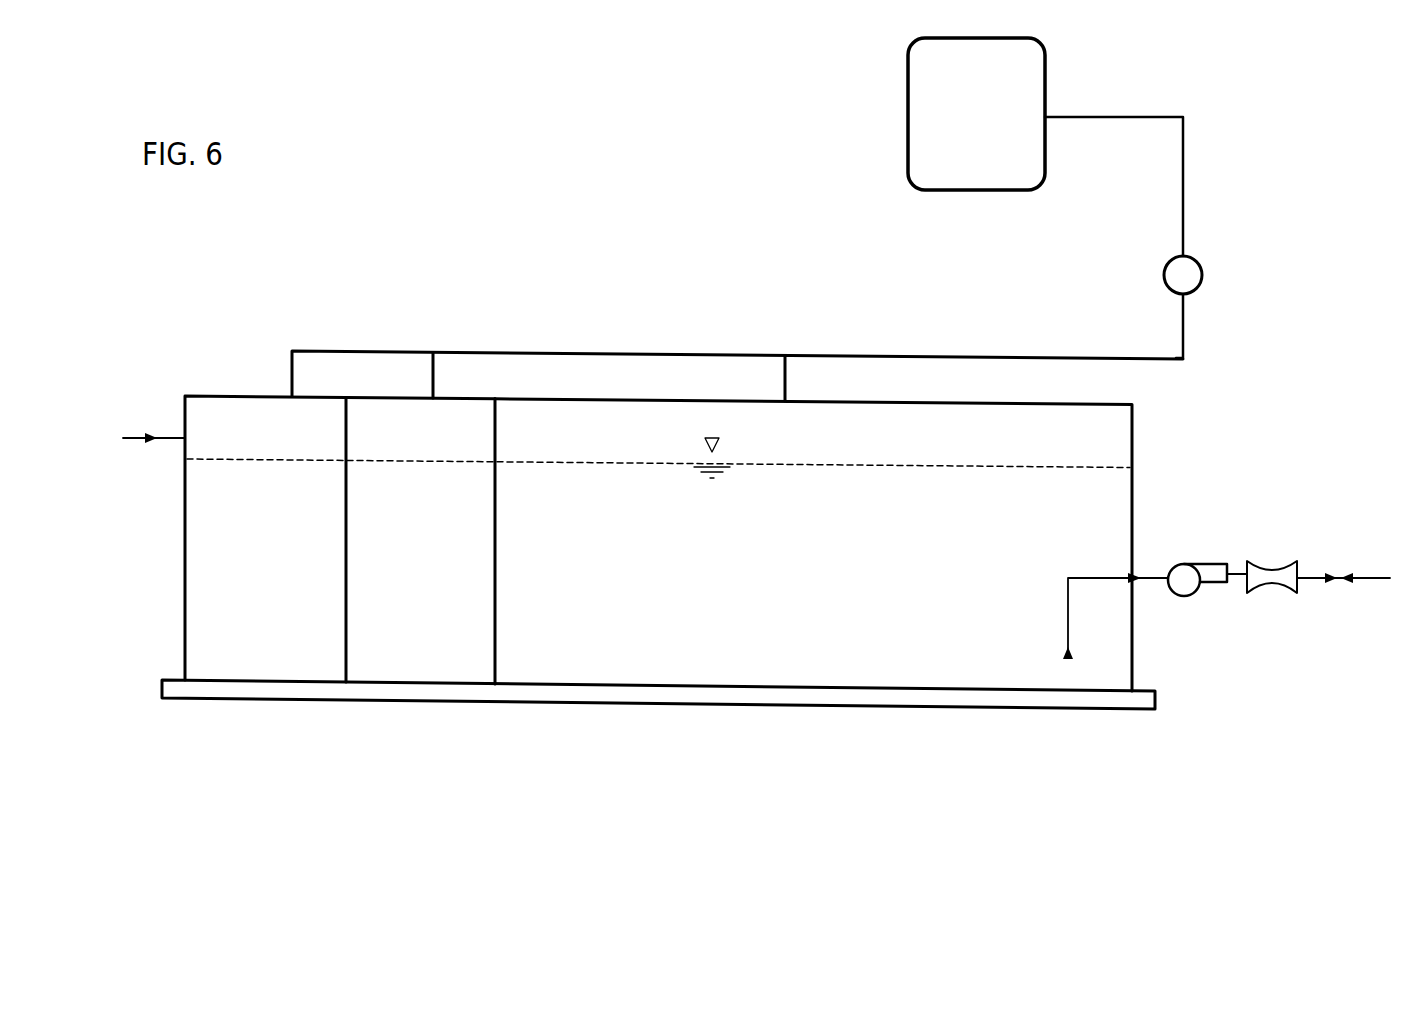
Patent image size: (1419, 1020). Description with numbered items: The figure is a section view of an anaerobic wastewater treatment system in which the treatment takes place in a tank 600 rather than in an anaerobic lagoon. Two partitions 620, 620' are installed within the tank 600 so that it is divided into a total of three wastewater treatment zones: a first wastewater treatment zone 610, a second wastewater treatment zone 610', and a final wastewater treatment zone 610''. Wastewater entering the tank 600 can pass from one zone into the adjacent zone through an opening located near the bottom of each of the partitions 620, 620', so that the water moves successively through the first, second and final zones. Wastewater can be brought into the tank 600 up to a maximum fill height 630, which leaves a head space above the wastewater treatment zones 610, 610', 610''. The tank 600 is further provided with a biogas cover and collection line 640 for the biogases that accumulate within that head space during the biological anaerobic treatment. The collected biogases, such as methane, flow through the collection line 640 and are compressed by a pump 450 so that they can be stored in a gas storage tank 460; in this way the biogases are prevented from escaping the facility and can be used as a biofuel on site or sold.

The tank 600 is at (756, 620).
The first wastewater treatment zone 610 is at (265, 538).
The second wastewater treatment zone 610' is at (420, 517).
The final wastewater treatment zone 610'' is at (813, 545).
The partition 620 is at (399, 540).
The partition 620' is at (552, 541).
The maximum fill height 630 is at (658, 473).
The biogas cover and collection line 640 is at (627, 355).
The pump 450 is at (1162, 283).
The gas storage tank 460 is at (907, 142).